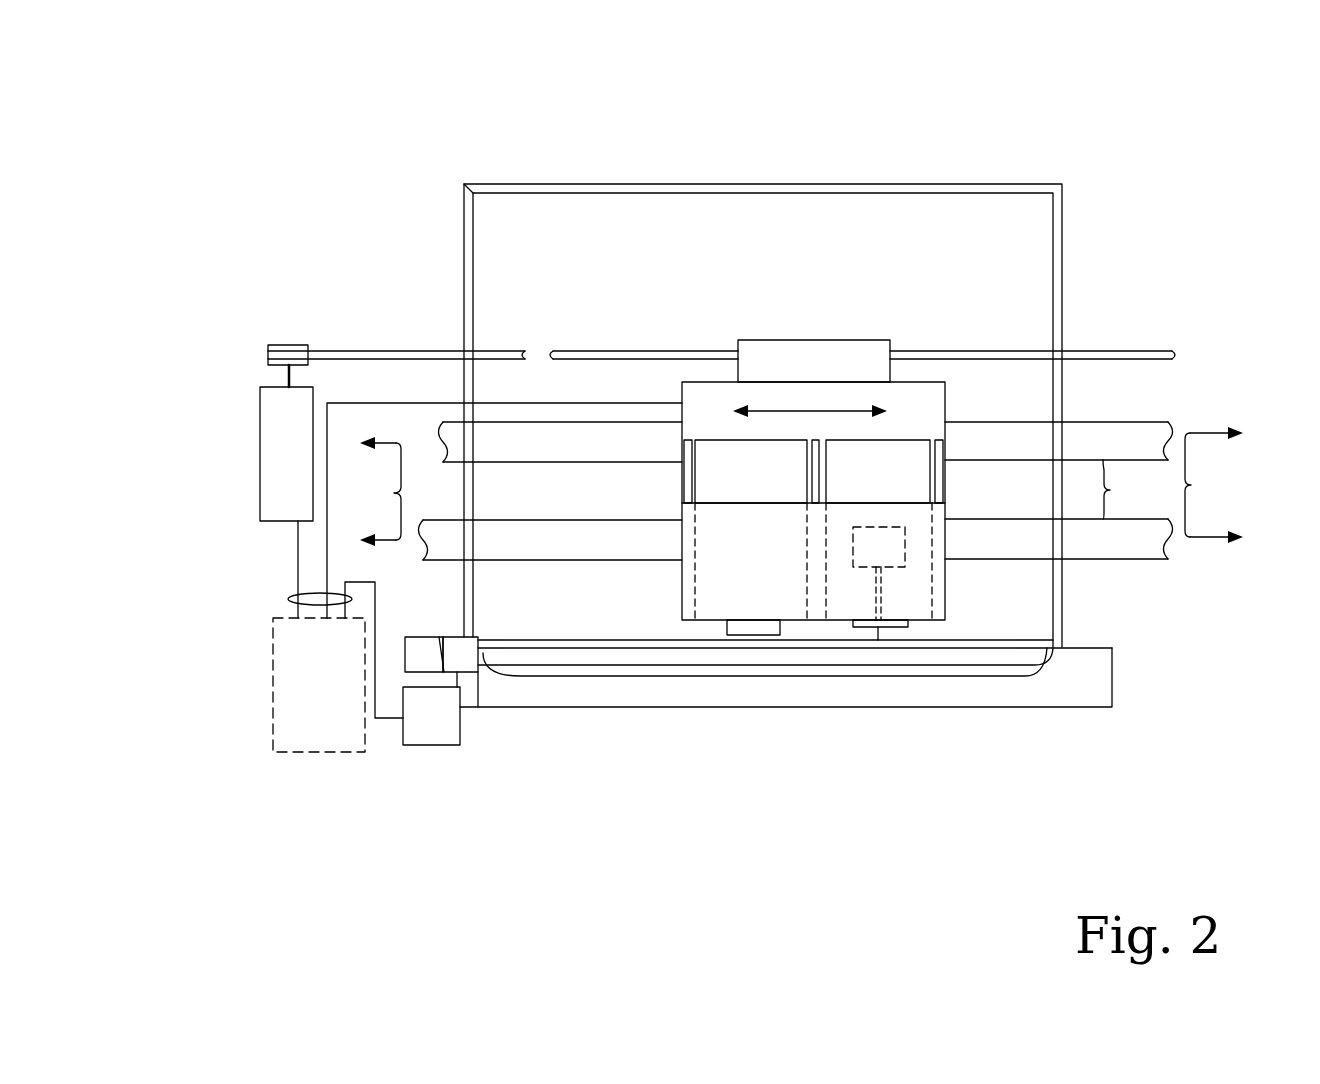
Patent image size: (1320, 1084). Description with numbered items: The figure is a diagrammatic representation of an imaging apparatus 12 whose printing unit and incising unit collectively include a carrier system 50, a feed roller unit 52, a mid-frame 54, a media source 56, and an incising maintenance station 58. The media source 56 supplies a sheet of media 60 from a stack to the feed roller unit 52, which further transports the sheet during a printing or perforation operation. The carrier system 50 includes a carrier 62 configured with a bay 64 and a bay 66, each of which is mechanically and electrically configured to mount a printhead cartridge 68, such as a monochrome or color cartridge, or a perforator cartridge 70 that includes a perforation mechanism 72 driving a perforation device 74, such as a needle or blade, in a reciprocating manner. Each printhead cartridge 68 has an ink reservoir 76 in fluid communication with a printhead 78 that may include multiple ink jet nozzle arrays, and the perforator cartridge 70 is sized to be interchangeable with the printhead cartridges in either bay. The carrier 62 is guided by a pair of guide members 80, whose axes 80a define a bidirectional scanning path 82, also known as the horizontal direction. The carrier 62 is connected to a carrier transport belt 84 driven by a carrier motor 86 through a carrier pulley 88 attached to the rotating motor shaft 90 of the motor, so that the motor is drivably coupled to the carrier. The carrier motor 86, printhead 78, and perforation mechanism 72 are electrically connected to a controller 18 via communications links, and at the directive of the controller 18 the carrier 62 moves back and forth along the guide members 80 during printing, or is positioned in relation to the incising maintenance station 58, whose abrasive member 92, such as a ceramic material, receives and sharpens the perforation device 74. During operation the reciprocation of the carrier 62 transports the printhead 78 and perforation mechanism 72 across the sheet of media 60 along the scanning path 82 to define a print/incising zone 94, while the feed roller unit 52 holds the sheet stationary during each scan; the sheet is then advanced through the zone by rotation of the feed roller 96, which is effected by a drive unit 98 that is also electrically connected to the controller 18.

The imaging apparatus 12 is at (905, 142).
The controller 18 is at (338, 667).
The carrier system 50 is at (873, 266).
The feed roller unit 52 is at (496, 832).
The mid-frame 54 is at (1112, 652).
The media source 56 is at (507, 184).
The incising maintenance station 58 is at (408, 637).
The sheet of media 60 is at (1035, 640).
The carrier 62 is at (945, 490).
The bay 64 is at (746, 478).
The bay 66 is at (885, 484).
The printhead cartridge 68 is at (696, 416).
The perforator cartridge 70 is at (914, 405).
The perforation mechanism 72 is at (905, 545).
The perforation device 74 is at (882, 592).
The ink reservoir 76 is at (725, 440).
The printhead 78 is at (727, 630).
The guide members 80 is at (1133, 489).
The axes 80a is at (795, 491).
The bidirectional scanning path 82 is at (803, 411).
The carrier transport belt 84 is at (383, 350).
The carrier motor 86 is at (260, 497).
The carrier pulley 88 is at (290, 345).
The motor shaft 90 is at (285, 375).
The abrasive member 92 is at (474, 640).
The print/incising zone 94 is at (773, 688).
The feed roller 96 is at (697, 707).
The drive unit 98 is at (431, 708).